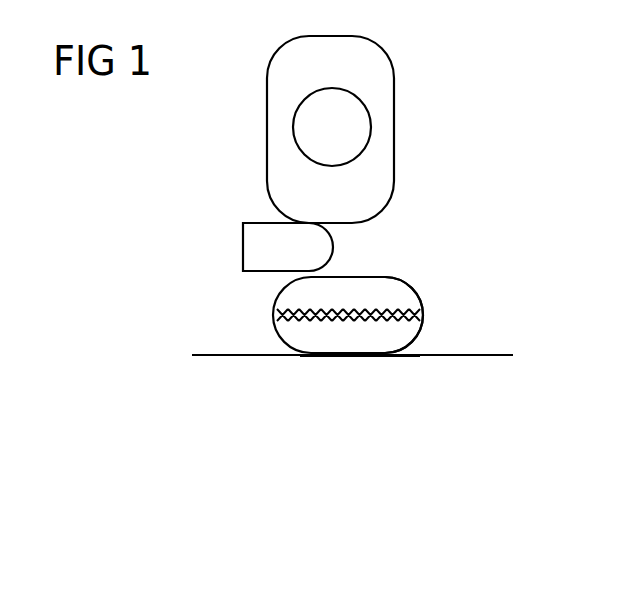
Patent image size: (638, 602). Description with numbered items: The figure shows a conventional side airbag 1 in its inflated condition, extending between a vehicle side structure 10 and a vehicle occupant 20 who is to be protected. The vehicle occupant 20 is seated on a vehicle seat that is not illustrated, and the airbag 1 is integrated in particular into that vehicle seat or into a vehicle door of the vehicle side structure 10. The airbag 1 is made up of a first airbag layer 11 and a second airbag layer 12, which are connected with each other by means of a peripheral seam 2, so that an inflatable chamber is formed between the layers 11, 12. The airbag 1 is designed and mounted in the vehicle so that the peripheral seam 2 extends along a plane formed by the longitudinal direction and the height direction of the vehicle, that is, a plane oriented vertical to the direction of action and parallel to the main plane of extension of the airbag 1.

The vehicle occupant 20 is at (373, 77).
The side airbag 1 is at (400, 278).
The first airbag layer 11 is at (417, 292).
The peripheral seam 2 is at (348, 320).
The vehicle side structure 10 is at (218, 357).
The second airbag layer 12 is at (407, 353).